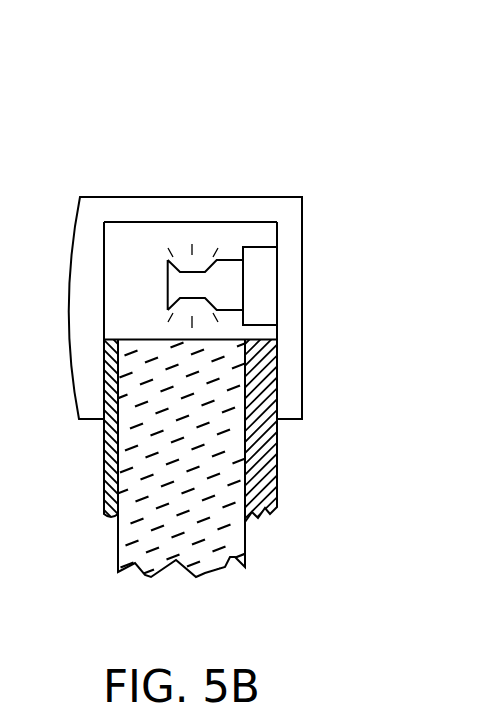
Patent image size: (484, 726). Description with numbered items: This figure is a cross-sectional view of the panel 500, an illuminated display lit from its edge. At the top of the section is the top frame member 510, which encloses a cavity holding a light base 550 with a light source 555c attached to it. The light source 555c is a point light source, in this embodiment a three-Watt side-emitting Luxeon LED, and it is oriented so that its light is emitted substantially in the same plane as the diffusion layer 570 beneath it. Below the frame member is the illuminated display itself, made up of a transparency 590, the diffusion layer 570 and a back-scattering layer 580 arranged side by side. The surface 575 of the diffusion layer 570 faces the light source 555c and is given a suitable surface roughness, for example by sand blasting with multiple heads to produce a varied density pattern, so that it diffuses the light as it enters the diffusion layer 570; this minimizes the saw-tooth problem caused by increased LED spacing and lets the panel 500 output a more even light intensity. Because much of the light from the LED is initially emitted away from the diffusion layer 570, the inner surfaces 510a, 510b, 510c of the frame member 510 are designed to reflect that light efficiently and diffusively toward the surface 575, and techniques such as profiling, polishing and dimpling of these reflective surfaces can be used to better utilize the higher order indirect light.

The panel 500 is at (133, 84).
The top frame member 510 is at (277, 197).
The inner surface 510a is at (106, 240).
The inner surface 510b is at (108, 262).
The inner surface 510c is at (277, 236).
The light base 550 is at (277, 285).
The light source 555c is at (196, 271).
The diffusion layer 570 is at (245, 537).
The surface 575 is at (132, 339).
The back-scattering layer 580 is at (277, 493).
The transparency 590 is at (105, 493).